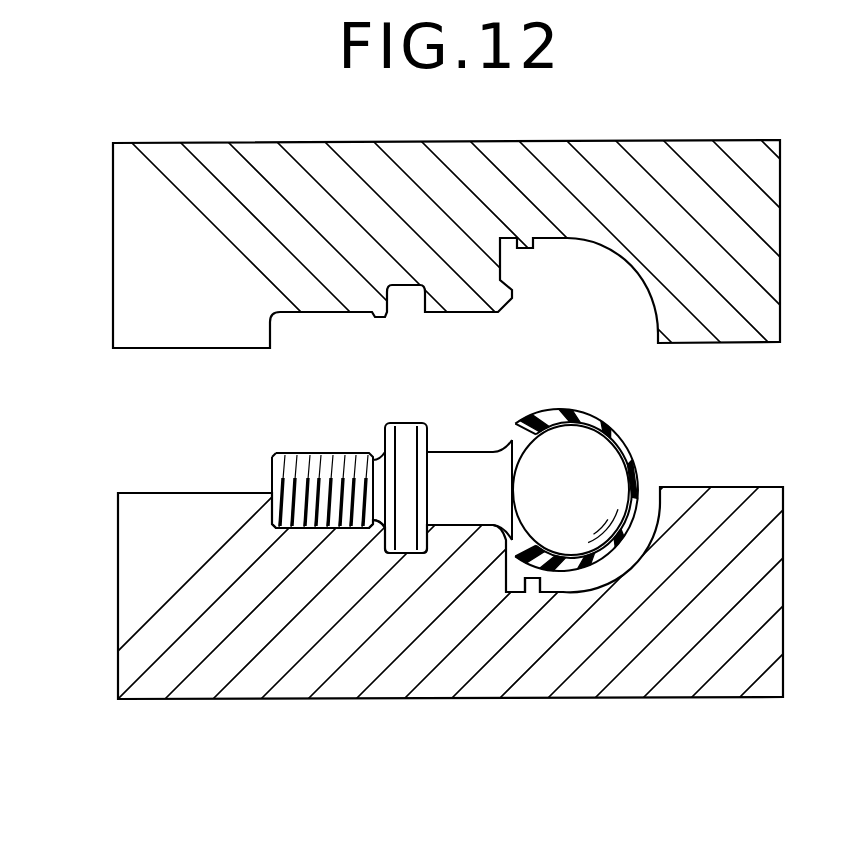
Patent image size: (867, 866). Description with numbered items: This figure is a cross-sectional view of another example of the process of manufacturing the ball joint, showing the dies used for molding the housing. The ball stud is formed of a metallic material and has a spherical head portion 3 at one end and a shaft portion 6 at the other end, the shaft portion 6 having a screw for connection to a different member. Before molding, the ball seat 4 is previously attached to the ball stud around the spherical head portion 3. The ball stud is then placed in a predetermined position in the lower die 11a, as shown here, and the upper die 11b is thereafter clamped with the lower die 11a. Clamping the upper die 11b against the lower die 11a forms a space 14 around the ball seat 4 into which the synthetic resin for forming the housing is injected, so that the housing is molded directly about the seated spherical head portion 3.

The lower die 11a is at (120, 250).
The upper die 11b is at (130, 582).
The space 14 is at (560, 578).
The shaft portion 6 is at (462, 462).
The spherical head portion 3 is at (583, 470).
The ball seat 4 is at (567, 412).